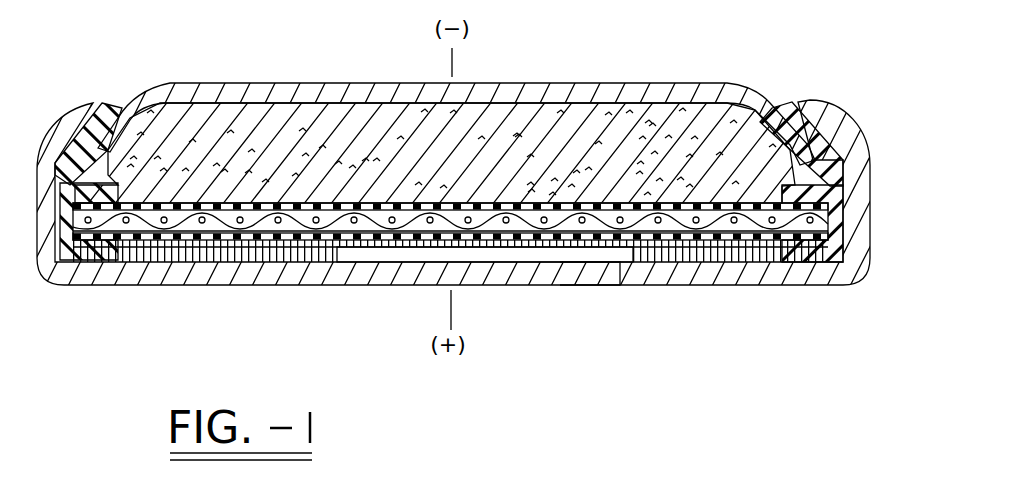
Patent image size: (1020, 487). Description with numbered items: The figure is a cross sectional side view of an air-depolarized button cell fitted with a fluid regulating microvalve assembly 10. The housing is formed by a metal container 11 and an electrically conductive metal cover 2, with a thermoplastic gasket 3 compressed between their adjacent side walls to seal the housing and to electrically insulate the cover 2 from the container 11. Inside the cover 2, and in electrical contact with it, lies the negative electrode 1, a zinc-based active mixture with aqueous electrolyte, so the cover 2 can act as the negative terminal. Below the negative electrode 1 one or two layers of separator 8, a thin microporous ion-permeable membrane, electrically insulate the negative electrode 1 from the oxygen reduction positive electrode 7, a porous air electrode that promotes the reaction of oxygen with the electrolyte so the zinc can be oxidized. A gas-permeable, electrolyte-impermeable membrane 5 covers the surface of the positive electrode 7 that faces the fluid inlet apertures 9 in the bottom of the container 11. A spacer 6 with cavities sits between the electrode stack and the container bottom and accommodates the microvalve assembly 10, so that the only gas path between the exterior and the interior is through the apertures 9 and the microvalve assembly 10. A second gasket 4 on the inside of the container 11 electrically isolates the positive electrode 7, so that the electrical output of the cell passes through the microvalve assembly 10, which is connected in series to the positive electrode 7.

The negative electrode 1 is at (272, 131).
The cover 2 is at (582, 84).
The gasket 3 is at (123, 104).
The second gasket 4 is at (88, 260).
The membrane 5 is at (700, 248).
The spacer 6 is at (152, 255).
The oxygen reduction positive electrode 7 is at (325, 204).
The separator 8 is at (377, 204).
The fluid inlet aperture 9 is at (590, 278).
The fluid regulating microvalve assembly 10 is at (408, 262).
The container 11 is at (223, 283).